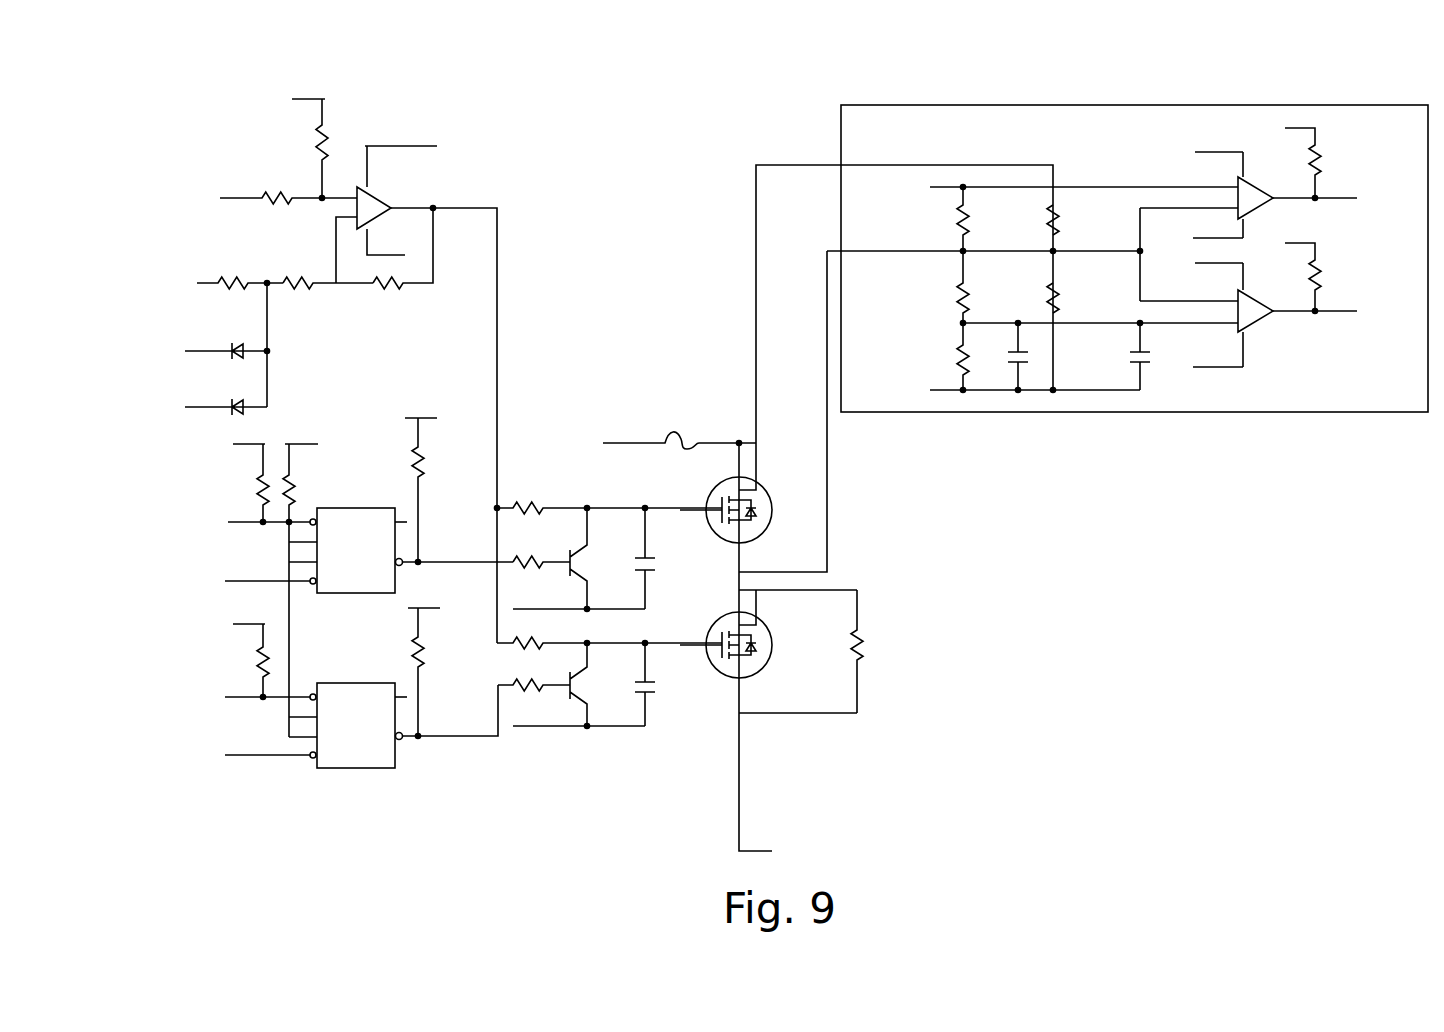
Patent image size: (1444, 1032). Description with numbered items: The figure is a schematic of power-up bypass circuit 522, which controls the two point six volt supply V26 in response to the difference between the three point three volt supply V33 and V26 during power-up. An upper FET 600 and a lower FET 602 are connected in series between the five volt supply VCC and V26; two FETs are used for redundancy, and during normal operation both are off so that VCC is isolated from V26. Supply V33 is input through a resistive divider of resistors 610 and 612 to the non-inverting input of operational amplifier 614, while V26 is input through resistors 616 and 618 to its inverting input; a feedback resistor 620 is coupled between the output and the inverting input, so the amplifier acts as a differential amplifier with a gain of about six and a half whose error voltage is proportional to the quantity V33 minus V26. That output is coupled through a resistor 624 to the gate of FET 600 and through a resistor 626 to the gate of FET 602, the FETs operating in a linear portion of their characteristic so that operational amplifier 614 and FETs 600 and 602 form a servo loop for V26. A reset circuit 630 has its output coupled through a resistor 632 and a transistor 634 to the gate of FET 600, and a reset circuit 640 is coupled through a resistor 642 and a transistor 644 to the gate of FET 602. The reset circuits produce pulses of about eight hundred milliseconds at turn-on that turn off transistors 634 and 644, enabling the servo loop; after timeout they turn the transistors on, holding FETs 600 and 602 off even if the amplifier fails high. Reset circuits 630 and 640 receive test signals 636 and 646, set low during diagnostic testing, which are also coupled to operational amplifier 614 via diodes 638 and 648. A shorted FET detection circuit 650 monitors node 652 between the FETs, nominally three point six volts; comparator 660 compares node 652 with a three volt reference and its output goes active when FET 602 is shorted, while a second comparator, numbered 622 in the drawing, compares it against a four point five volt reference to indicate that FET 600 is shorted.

The resistor 612 is at (325, 118).
The resistor 610 is at (283, 208).
The operational amplifier 614 is at (383, 195).
The resistor 616 is at (222, 278).
The resistor 618 is at (298, 278).
The feedback resistor 620 is at (386, 296).
The diode 638 is at (237, 344).
The test signal 636 is at (213, 354).
The diode 648 is at (237, 400).
The test signal 646 is at (213, 410).
The reset circuit 630 is at (352, 596).
The reset circuit 640 is at (360, 770).
The resistor 624 is at (527, 500).
The resistor 632 is at (527, 558).
The transistor 634 is at (585, 565).
The resistor 626 is at (533, 640).
The resistor 642 is at (522, 678).
The transistor 644 is at (585, 688).
The upper FET 600 is at (713, 486).
The lower FET 602 is at (713, 622).
The node 652 is at (817, 570).
The shorted FET detection circuit 650 is at (1235, 413).
The comparator 622 is at (1257, 178).
The comparator 660 is at (1260, 333).
The power-up bypass circuit 522 is at (588, 792).